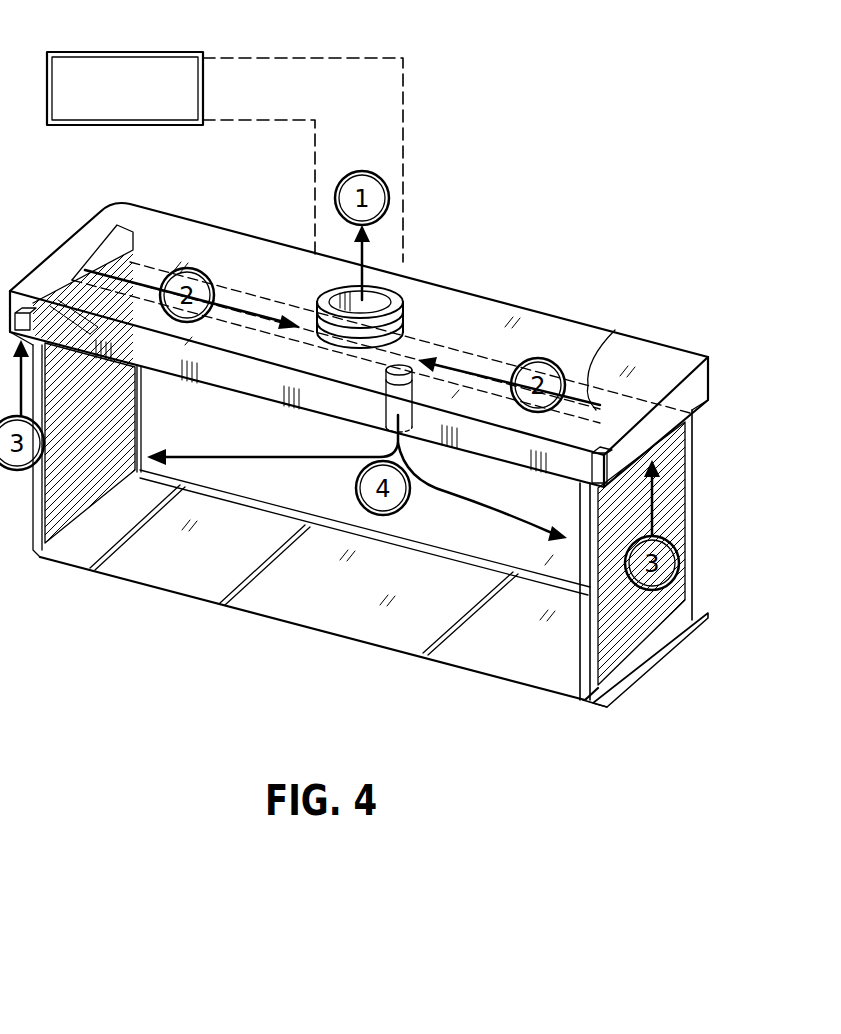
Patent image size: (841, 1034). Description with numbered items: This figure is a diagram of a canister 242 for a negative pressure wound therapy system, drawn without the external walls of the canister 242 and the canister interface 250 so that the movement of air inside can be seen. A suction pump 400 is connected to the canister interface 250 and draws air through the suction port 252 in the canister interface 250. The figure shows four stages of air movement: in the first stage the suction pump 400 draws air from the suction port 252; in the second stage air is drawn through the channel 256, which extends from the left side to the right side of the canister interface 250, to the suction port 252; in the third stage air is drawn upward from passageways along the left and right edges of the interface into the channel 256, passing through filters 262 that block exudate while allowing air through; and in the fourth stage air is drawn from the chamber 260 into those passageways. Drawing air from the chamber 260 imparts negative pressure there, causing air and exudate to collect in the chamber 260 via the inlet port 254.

The suction pump 400 is at (133, 52).
The canister 242 is at (586, 236).
The canister interface 250 is at (530, 322).
The suction port 252 is at (387, 290).
The inlet port 254 is at (408, 366).
The channel 256 is at (600, 355).
The chamber 260 is at (273, 515).
The filters 262 is at (688, 490).